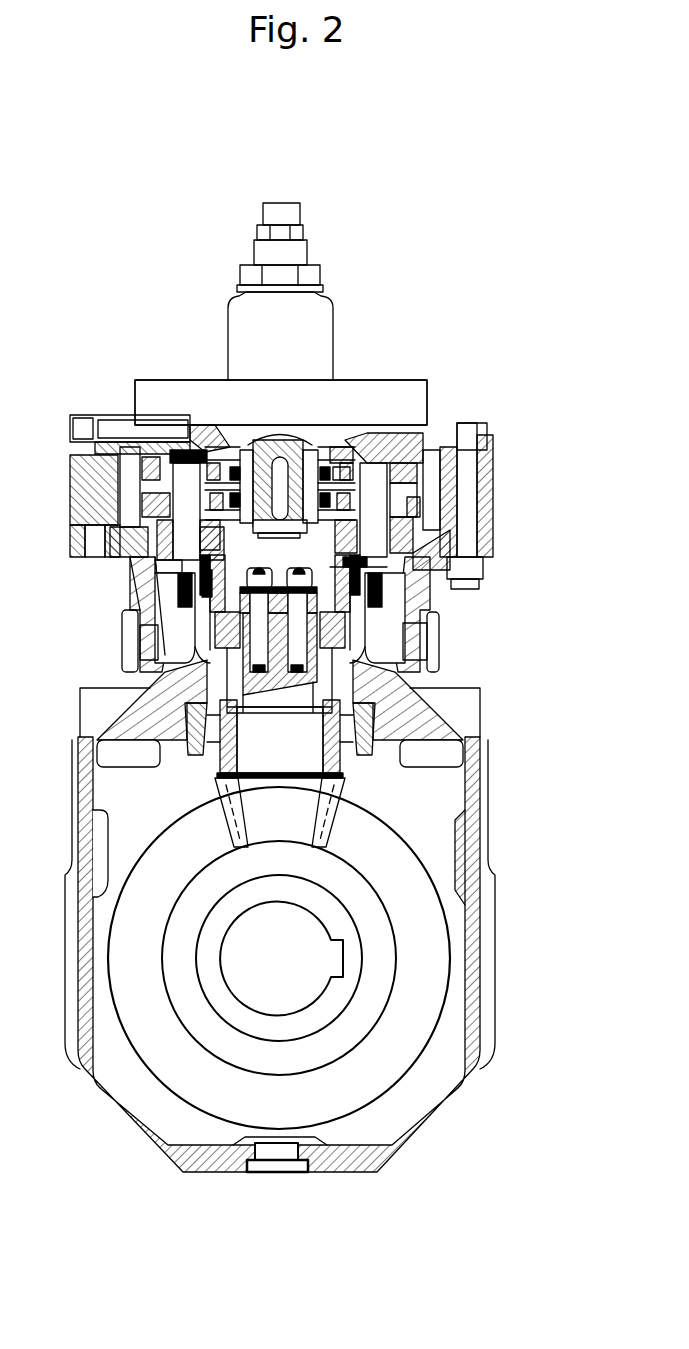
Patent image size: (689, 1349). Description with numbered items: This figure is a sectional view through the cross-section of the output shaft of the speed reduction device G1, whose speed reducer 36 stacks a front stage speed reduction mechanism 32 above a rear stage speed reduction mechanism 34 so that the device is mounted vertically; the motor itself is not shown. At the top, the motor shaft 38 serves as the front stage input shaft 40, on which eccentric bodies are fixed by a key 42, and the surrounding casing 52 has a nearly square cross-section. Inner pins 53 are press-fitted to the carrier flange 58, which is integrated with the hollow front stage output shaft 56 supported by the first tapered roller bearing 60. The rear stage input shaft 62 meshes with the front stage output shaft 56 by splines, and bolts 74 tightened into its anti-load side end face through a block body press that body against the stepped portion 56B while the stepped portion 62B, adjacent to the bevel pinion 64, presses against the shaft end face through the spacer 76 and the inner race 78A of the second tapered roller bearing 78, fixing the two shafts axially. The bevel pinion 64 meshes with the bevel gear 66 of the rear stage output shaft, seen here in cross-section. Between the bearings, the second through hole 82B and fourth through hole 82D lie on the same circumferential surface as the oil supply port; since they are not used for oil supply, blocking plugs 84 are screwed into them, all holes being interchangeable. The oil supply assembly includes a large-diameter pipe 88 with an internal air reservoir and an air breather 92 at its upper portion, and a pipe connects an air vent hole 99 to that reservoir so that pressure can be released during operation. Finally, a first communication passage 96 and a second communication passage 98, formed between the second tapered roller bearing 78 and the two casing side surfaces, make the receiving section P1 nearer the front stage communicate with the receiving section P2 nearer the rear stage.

The speed reduction device G1 is at (455, 238).
The air breather 92 is at (290, 252).
The large-diameter pipe 88 is at (320, 347).
The front stage input shaft 40 is at (292, 475).
The motor shaft 38 is at (281, 402).
The key 42 is at (262, 470).
The front stage speed reduction mechanism 32 is at (295, 473).
The air vent hole 99 is at (115, 430).
The speed reducer 36 is at (512, 506).
The casing 52 is at (495, 505).
The inner pins 53 is at (460, 545).
The bolts 74 is at (272, 572).
The carrier flange 58 is at (132, 568).
The first tapered roller bearing 60 is at (140, 592).
The blocking plugs 84 is at (122, 630).
The second through hole 82B is at (125, 650).
The fourth through hole 82D is at (440, 655).
The front stage output shaft 56 is at (218, 613).
The stepped portion 56B is at (398, 664).
The receiving section P1 is at (356, 624).
The receiving section P2 is at (432, 806).
The first communication passage 96 is at (150, 705).
The second communication passage 98 is at (410, 725).
The spacer 76 is at (240, 733).
The inner race 78A is at (320, 741).
The second tapered roller bearing 78 is at (160, 753).
The rear stage input shaft 62 is at (187, 780).
The stepped portion 62B is at (357, 770).
The bevel pinion 64 is at (225, 822).
The rear stage speed reduction mechanism 34 is at (338, 826).
The bevel gear 66 is at (425, 980).